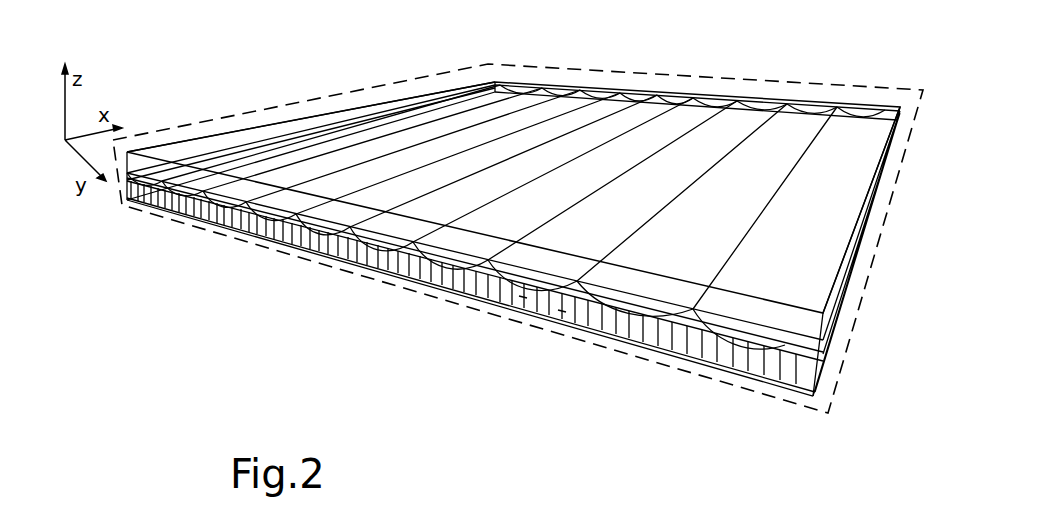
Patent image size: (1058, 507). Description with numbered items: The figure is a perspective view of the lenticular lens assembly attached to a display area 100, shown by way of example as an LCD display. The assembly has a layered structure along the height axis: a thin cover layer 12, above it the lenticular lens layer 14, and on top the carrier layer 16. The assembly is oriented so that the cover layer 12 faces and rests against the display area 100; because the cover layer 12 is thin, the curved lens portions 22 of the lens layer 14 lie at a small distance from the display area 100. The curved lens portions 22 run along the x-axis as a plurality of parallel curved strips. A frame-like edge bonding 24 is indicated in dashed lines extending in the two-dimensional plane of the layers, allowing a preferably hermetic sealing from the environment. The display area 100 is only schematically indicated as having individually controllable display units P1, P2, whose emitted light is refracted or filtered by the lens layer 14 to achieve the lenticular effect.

The display area 100 is at (398, 277).
The cover layer 12 is at (678, 330).
The lenticular lens layer 14 is at (738, 328).
The carrier layer 16 is at (808, 105).
The curved lens portions 22 is at (263, 208).
The edge bonding 24 is at (813, 407).
The display unit P1 is at (523, 307).
The display unit P2 is at (562, 315).